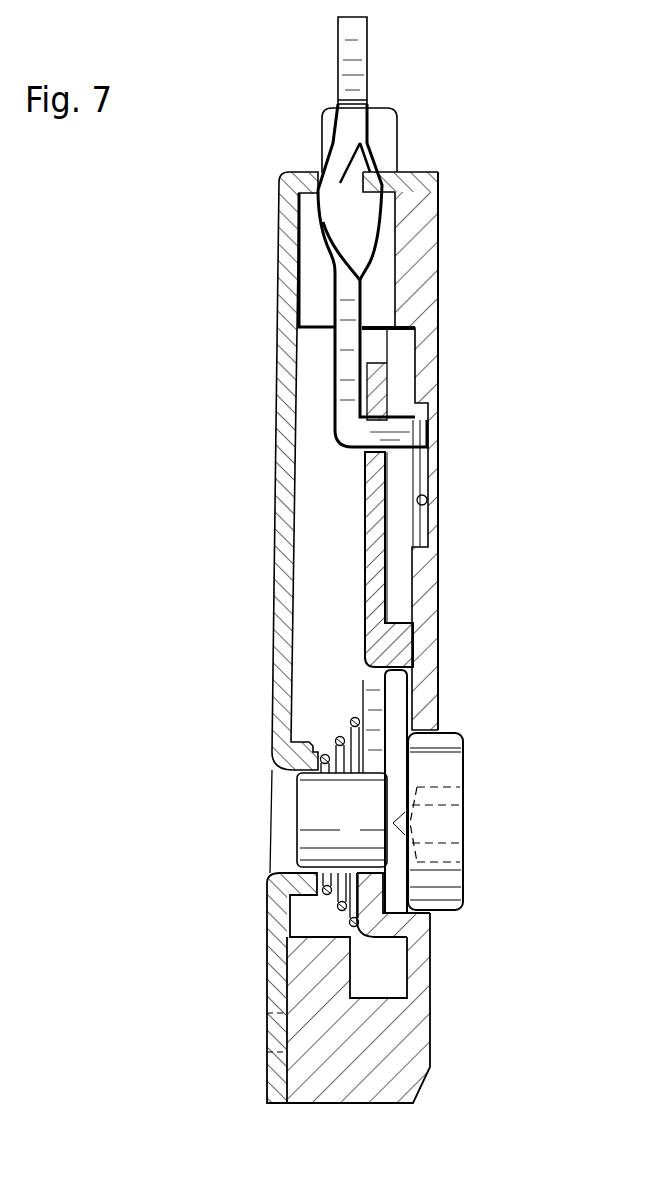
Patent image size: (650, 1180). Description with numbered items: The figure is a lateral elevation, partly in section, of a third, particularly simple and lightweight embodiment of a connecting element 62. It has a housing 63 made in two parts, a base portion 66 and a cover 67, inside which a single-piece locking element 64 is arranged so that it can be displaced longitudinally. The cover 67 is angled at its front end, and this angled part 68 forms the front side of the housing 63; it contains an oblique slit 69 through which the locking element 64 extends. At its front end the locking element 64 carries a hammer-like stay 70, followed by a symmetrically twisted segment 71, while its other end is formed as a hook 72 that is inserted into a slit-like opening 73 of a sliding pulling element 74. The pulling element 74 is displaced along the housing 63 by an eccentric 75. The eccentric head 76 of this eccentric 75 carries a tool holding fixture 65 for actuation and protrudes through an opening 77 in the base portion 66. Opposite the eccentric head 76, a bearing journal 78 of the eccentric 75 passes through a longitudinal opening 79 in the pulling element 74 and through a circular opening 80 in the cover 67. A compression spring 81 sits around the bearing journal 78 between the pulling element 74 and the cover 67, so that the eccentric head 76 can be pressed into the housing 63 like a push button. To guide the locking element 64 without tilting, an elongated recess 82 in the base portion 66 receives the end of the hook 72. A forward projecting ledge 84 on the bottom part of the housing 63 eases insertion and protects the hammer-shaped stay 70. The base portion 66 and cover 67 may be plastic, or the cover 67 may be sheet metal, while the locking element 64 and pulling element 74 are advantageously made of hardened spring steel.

The connecting element 62 is at (213, 293).
The housing 63 is at (440, 221).
The locking element 64 is at (330, 346).
The tool holding fixture 65 is at (453, 790).
The base portion 66 is at (425, 280).
The cover 67 is at (290, 527).
The angled part 68 is at (432, 172).
The oblique slit 69 is at (368, 165).
The hammer-like stay 70 is at (357, 49).
The symmetrically twisted segment 71 is at (340, 197).
The hook 72 is at (412, 435).
The slit-like opening 73 is at (385, 462).
The pulling element 74 is at (385, 538).
The eccentric 75 is at (463, 723).
The eccentric head 76 is at (453, 765).
The opening 77 is at (427, 917).
The bearing journal 78 is at (317, 803).
The longitudinal opening 79 is at (363, 700).
The circular opening 80 is at (285, 868).
The compression spring 81 is at (318, 736).
The elongated recess 82 is at (425, 500).
The ledge 84 is at (328, 128).